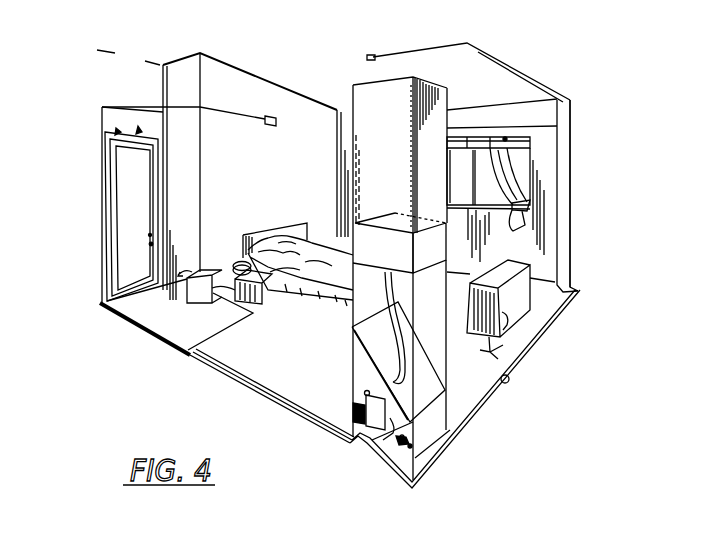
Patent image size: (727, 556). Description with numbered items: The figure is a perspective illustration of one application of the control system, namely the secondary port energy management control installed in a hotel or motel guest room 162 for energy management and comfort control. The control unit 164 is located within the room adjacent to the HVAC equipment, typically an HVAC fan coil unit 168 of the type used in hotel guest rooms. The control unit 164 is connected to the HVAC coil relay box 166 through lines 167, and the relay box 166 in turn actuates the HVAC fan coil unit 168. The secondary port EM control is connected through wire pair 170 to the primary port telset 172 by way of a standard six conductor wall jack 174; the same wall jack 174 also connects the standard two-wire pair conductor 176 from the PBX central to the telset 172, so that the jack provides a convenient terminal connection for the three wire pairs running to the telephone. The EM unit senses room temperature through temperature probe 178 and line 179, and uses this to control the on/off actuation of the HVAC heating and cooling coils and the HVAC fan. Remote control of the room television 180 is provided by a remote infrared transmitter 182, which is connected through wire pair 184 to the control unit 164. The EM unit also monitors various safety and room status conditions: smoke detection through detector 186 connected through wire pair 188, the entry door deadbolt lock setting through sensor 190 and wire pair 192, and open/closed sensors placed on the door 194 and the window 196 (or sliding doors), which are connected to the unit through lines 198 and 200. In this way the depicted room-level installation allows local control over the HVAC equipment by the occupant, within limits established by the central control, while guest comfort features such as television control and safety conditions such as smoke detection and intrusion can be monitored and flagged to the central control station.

The hotel or motel guest room 162 is at (300, 63).
The control unit 164 is at (362, 398).
The HVAC coil relay box 166 is at (401, 260).
The lines 167 is at (393, 338).
The HVAC fan coil unit 168 is at (446, 422).
The wire pair 170 is at (228, 329).
The primary port telset 172 is at (228, 248).
The six conductor wall jack 174 is at (207, 303).
The two-wire pair conductor 176 is at (115, 313).
The temperature probe 178 is at (412, 448).
The line 179 is at (400, 440).
The room television 180 is at (533, 304).
The remote infrared transmitter 182 is at (276, 122).
The wire pair 184 is at (100, 125).
The smoke detector 186 is at (367, 56).
The wire pair 188 is at (563, 117).
The deadbolt lock sensor 190 is at (152, 236).
The wire pair 192 is at (140, 128).
The door 194 is at (150, 150).
The window 196 is at (506, 138).
The line 198 is at (118, 132).
The line 200 is at (512, 381).